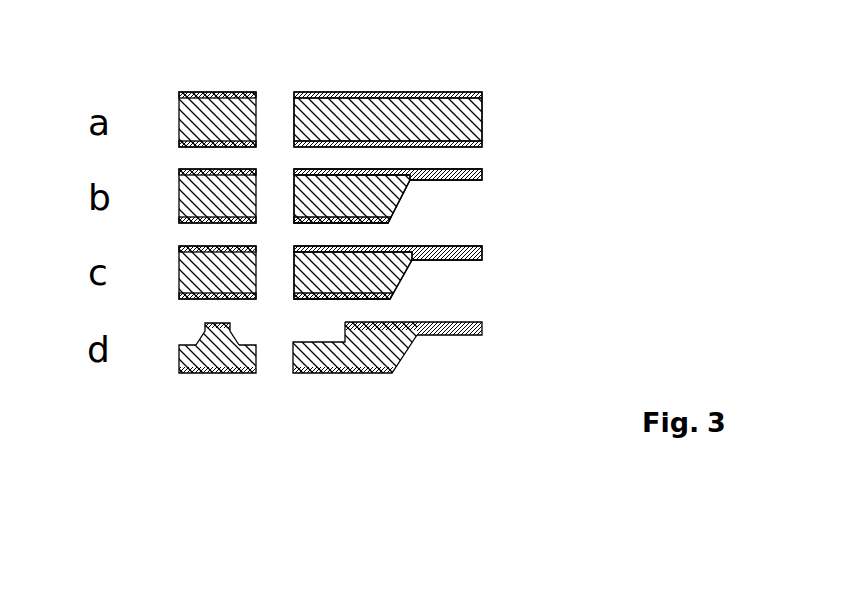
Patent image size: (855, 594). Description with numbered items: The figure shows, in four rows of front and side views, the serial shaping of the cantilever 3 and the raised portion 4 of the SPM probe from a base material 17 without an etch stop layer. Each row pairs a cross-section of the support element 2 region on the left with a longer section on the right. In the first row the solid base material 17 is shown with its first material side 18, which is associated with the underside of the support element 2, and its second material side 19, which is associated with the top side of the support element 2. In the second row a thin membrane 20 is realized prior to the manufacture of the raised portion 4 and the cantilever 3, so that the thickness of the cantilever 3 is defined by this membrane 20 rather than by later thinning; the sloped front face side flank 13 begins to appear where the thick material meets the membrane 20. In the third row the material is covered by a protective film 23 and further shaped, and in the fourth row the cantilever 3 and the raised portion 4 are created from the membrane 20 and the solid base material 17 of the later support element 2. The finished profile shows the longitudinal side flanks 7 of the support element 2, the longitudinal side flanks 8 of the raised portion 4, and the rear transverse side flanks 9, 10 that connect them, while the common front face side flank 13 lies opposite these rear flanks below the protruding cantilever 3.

The first material side 18 is at (413, 92).
The base material 17 is at (460, 115).
The second material side 19 is at (449, 144).
The thin membrane 20 is at (482, 173).
The front face side flank 13 is at (400, 198).
The protective film 23 is at (408, 265).
The rear transverse side flank 10 is at (345, 329).
The longitudinal side flank 8 is at (202, 330).
The longitudinal side flank 7 is at (181, 368).
The rear transverse side flank 9 is at (294, 346).
The support element 2 is at (322, 346).
The raised portion 4 is at (363, 323).
The cantilever 3 is at (472, 333).